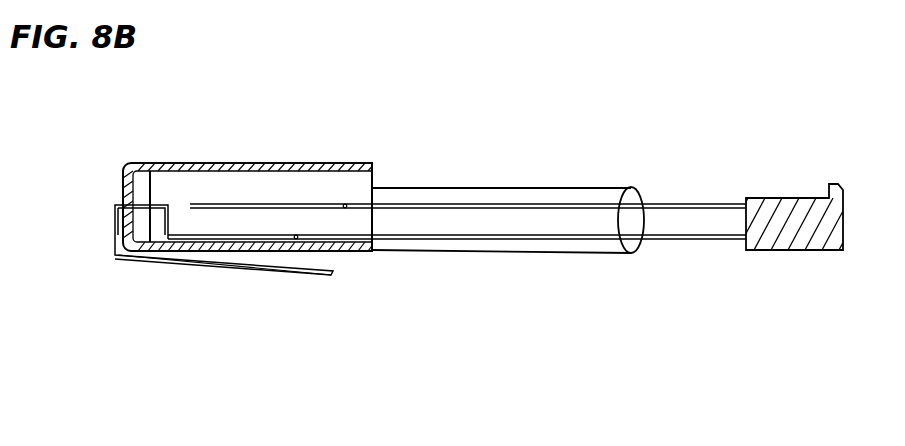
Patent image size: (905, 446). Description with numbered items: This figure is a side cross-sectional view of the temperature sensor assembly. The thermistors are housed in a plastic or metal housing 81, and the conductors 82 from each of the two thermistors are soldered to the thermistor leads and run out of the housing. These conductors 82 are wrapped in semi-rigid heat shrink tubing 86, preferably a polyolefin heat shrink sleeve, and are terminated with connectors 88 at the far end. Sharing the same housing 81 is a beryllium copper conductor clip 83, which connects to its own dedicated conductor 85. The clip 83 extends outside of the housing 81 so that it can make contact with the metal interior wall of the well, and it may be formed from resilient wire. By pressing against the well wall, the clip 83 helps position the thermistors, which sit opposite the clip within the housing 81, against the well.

The housing 81 is at (265, 163).
The conductors 82 is at (524, 204).
The conductor clip 83 is at (112, 272).
The dedicated conductor 85 is at (481, 242).
The semi-rigid heat shrink tubing 86 is at (583, 255).
The connectors 88 is at (813, 250).